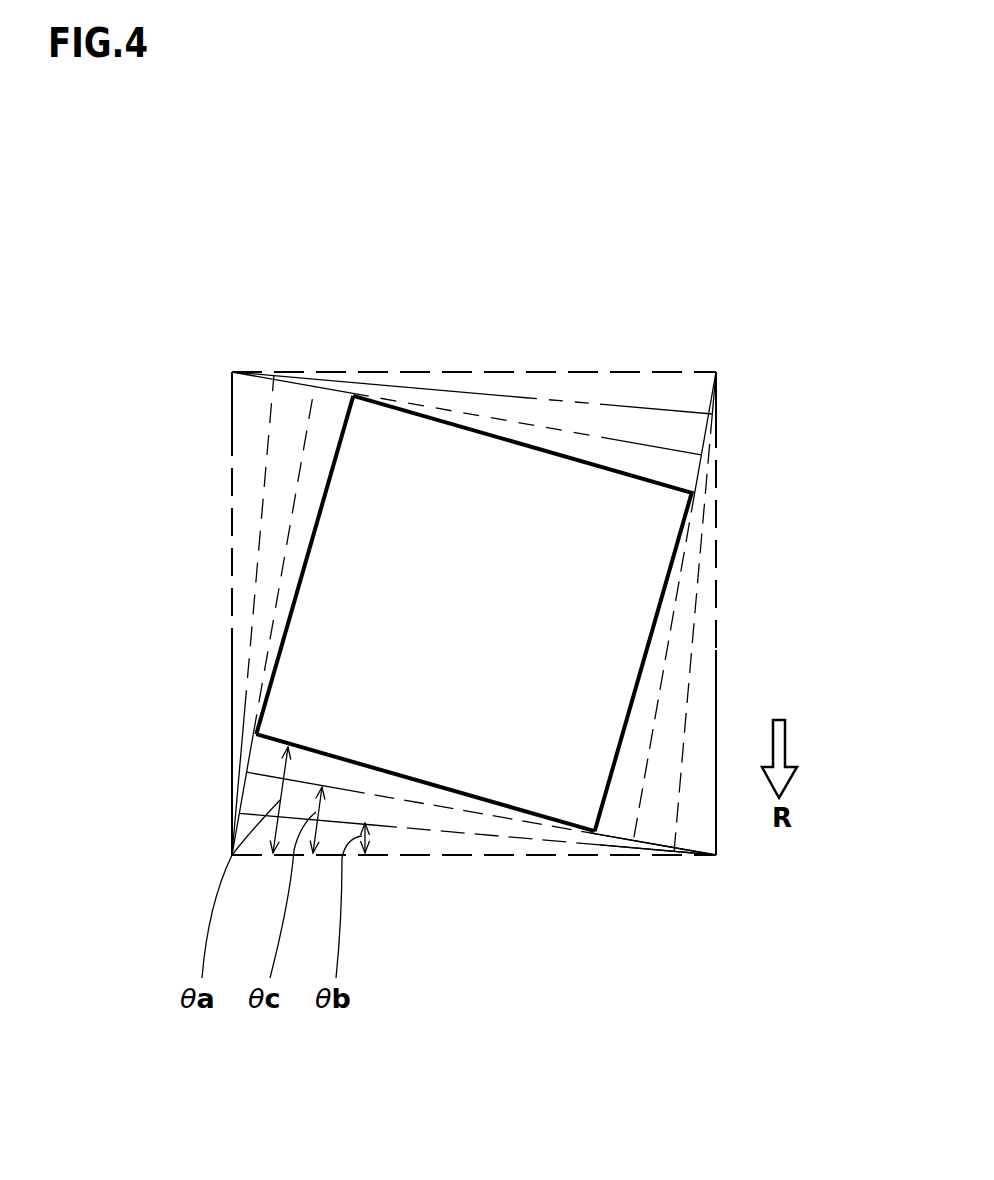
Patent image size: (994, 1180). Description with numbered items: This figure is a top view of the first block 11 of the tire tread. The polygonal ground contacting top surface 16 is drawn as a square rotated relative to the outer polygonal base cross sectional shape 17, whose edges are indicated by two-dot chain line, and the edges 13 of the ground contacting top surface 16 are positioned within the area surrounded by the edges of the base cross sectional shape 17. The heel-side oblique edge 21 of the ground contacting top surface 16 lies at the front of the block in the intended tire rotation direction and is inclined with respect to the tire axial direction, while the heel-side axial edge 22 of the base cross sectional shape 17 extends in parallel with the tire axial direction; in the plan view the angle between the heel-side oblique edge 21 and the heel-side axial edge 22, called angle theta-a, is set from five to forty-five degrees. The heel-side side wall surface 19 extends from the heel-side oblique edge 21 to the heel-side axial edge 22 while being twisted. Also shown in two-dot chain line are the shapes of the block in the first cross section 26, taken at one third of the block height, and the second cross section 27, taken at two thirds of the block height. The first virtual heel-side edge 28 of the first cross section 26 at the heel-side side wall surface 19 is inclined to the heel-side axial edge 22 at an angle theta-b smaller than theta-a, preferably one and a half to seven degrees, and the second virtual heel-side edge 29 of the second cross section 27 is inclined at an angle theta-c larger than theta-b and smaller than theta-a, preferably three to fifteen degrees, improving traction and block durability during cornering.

The first block 11 is at (380, 622).
The edges of the ground contacting top surface 13 is at (333, 465).
The ground contacting top surface 16 is at (472, 705).
The base cross sectional shape 17 is at (138, 750).
The heel-side side wall surface 19 is at (392, 812).
The heel-side oblique edge 21 is at (478, 799).
The heel-side axial edge 22 is at (638, 856).
The first cross section 26 is at (477, 938).
The second cross section 27 is at (481, 917).
The first virtual heel-side edge 28 is at (658, 850).
The second virtual heel-side edge 29 is at (653, 844).